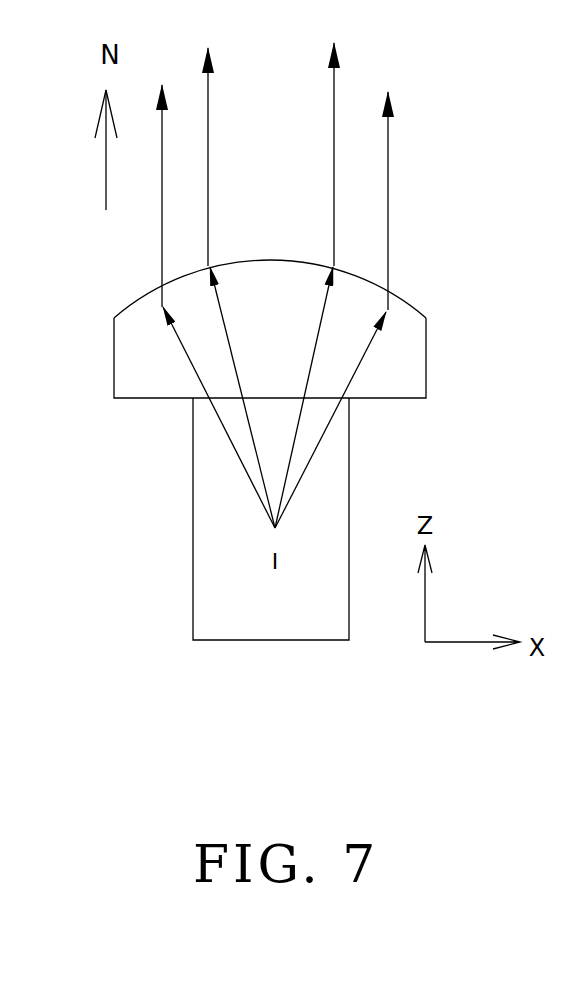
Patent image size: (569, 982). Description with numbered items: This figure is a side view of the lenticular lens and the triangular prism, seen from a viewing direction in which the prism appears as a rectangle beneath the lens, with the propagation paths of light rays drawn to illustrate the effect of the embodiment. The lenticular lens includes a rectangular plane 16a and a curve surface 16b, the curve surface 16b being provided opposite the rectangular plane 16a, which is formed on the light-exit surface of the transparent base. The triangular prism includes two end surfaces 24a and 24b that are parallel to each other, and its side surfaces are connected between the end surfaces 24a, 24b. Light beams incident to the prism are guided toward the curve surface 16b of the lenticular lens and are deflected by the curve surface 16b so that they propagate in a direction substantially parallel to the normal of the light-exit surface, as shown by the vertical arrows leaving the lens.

The rectangular plane 16a is at (380, 398).
The curve surface 16b is at (402, 298).
The end surface 24a is at (349, 515).
The end surface 24b is at (193, 530).